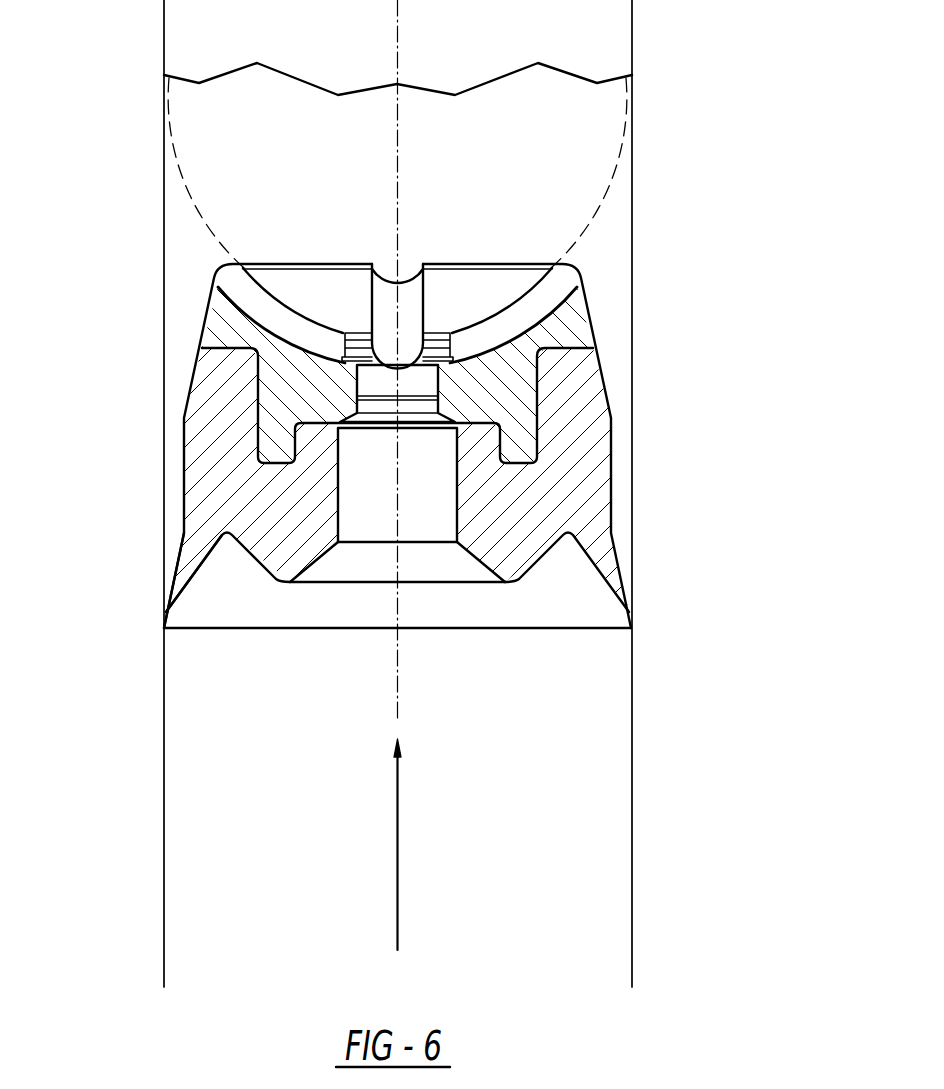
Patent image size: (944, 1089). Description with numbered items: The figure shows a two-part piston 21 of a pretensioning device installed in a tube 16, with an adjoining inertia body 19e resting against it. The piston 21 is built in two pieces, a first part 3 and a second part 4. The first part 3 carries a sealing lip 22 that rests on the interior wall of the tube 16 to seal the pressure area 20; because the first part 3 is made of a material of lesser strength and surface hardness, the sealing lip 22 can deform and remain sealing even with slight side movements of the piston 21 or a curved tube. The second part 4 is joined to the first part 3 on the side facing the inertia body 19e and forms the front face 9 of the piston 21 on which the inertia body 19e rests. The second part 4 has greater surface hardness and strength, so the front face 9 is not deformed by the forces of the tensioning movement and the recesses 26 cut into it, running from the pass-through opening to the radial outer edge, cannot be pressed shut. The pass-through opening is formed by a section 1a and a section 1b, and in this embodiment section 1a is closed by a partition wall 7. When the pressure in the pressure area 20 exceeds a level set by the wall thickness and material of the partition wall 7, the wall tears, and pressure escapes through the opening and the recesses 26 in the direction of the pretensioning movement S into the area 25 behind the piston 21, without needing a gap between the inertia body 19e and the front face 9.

The tube 16 is at (164, 875).
The pressure area 20 is at (238, 706).
The pretensioning movement S is at (395, 823).
The ball 19e is at (247, 172).
The area located behind the piston 25 is at (190, 252).
The first part 3 is at (220, 458).
The sealing lip 22 is at (185, 583).
The piston 21 is at (578, 457).
The section of the pass-through opening 1b is at (430, 507).
The second part 4 is at (225, 327).
The front face 9 is at (500, 298).
The recesses 26 is at (533, 315).
The section of the pass-through opening 1a is at (417, 380).
The partition wall 7 is at (390, 394).